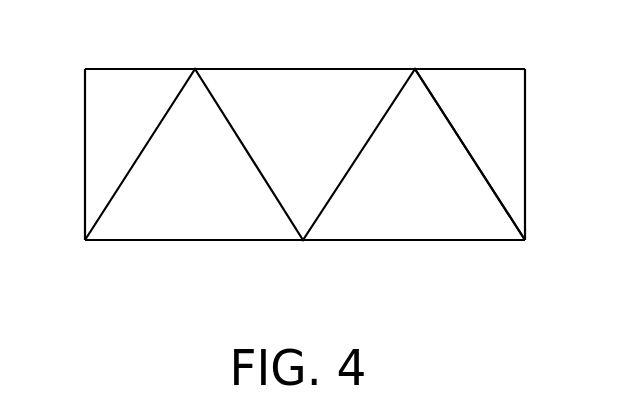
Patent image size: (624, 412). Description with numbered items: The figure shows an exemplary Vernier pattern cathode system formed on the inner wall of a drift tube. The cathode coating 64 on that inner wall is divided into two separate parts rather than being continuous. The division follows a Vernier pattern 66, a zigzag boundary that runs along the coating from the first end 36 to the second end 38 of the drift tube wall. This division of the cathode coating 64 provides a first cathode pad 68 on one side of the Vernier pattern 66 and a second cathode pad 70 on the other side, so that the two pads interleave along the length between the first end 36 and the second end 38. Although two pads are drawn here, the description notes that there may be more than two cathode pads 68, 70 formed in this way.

The first end 36 is at (525, 115).
The second end 38 is at (85, 118).
The cathode coating 64 is at (498, 92).
The Vernier pattern 66 is at (492, 195).
The first cathode pad 68 is at (127, 87).
The second cathode pad 70 is at (197, 213).